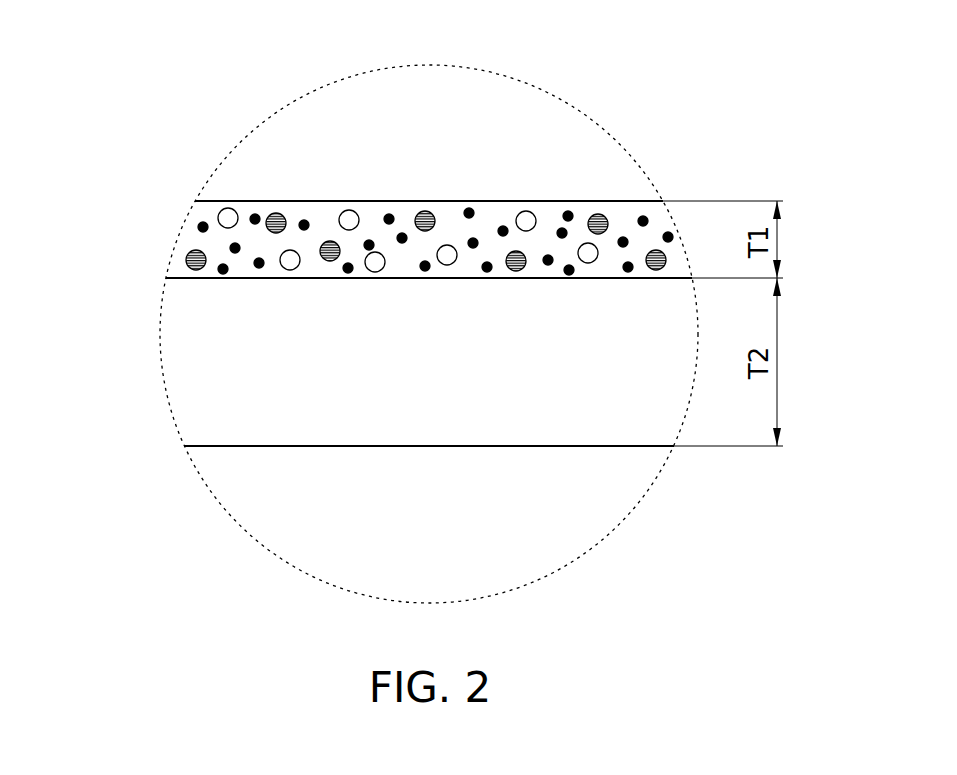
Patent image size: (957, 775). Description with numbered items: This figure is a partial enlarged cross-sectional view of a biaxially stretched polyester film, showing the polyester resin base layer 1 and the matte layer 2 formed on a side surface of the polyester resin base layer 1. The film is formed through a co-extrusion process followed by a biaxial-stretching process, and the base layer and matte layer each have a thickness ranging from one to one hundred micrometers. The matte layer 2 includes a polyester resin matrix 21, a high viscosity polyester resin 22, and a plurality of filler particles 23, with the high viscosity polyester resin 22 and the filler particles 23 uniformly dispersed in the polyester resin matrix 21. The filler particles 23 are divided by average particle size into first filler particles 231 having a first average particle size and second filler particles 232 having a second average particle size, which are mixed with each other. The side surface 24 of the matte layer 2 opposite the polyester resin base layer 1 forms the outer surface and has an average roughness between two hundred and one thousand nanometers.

The polyester resin base layer 1 is at (556, 453).
The matte layer 2 is at (369, 201).
The polyester resin matrix 21 is at (299, 216).
The high viscosity polyester resin 22 is at (354, 215).
The filler particles 23 is at (127, 241).
The first filler particles 231 is at (198, 225).
The second filler particles 232 is at (147, 265).
The side surface of the matte layer 24 is at (489, 189).